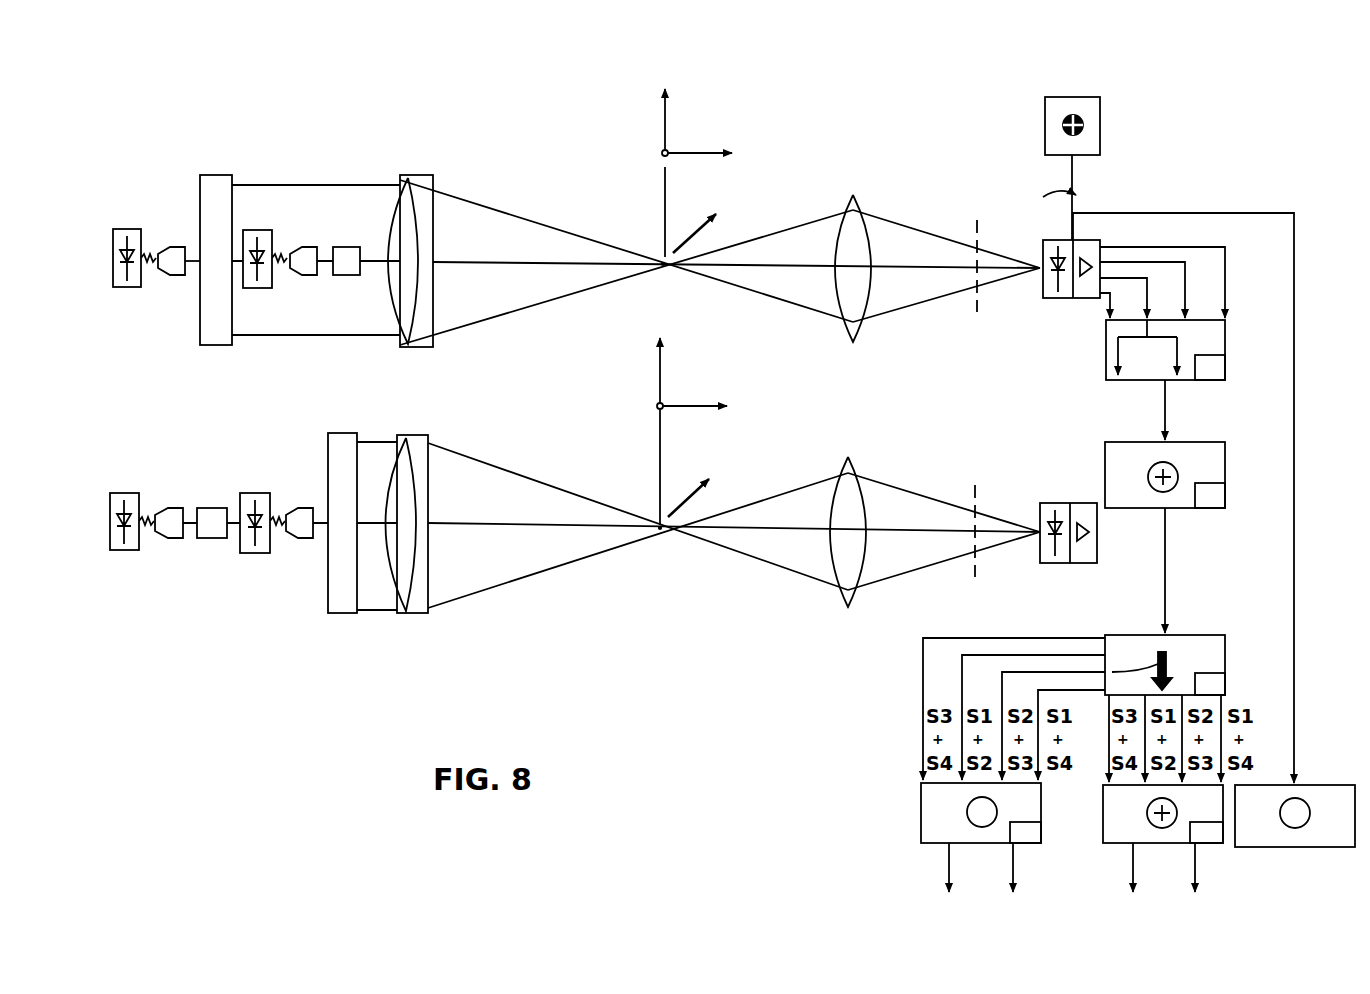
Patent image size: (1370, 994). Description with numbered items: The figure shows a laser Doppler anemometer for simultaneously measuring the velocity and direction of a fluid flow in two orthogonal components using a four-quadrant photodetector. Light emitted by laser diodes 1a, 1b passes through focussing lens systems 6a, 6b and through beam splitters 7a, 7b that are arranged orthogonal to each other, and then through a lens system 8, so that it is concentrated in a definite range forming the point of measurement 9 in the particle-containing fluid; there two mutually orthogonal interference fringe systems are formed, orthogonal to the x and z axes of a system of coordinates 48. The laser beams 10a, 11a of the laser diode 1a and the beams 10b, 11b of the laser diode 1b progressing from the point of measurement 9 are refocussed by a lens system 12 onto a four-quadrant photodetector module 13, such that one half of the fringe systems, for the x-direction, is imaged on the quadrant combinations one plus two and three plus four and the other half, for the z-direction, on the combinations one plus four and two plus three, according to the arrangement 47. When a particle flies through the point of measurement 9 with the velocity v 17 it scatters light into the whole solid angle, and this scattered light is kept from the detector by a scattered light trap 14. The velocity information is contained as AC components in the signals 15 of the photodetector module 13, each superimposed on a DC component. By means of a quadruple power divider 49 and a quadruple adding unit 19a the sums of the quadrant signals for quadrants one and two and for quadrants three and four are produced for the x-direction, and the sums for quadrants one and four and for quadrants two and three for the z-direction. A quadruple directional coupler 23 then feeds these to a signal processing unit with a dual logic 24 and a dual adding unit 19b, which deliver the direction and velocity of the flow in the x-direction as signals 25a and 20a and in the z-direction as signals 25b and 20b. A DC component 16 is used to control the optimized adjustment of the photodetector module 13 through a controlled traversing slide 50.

The laser diode 1a is at (117, 228).
The focussing lens system 6a is at (170, 246).
The beam splitter 7a is at (214, 180).
The laser diode 1b is at (258, 229).
The focussing lens system 6b is at (305, 246).
The beam splitter 7b is at (347, 246).
The lens system 8 is at (402, 180).
The laser beam 10a is at (538, 226).
The laser beam 11a is at (540, 300).
The laser beam 10b is at (538, 487).
The laser beam 11b is at (540, 572).
The point of measurement 9 is at (656, 257).
The velocity vector v 17 is at (706, 358).
The system of coordinates 48 is at (673, 147).
The lens system 12 is at (850, 334).
The scattered light trap 14 is at (977, 310).
The four-quadrant photodetector module 13 is at (1047, 298).
The arrangement 47 is at (1100, 125).
The DC component 16 is at (1192, 213).
The signals 15 is at (1106, 298).
The quadruple power divider 49 is at (1106, 360).
The quadruple adding unit 19a is at (1105, 470).
The quadruple directional coupler 23 is at (1135, 634).
The dual logic 24 is at (921, 812).
The dual adding unit 19b is at (1103, 828).
The controlled traversing slide 50 is at (1318, 847).
The direction signal for x-direction 25a is at (952, 887).
The direction signal for z-direction 25b is at (1017, 887).
The velocity signal for x-direction 20a is at (1139, 887).
The velocity signal for z-direction 20b is at (1202, 887).